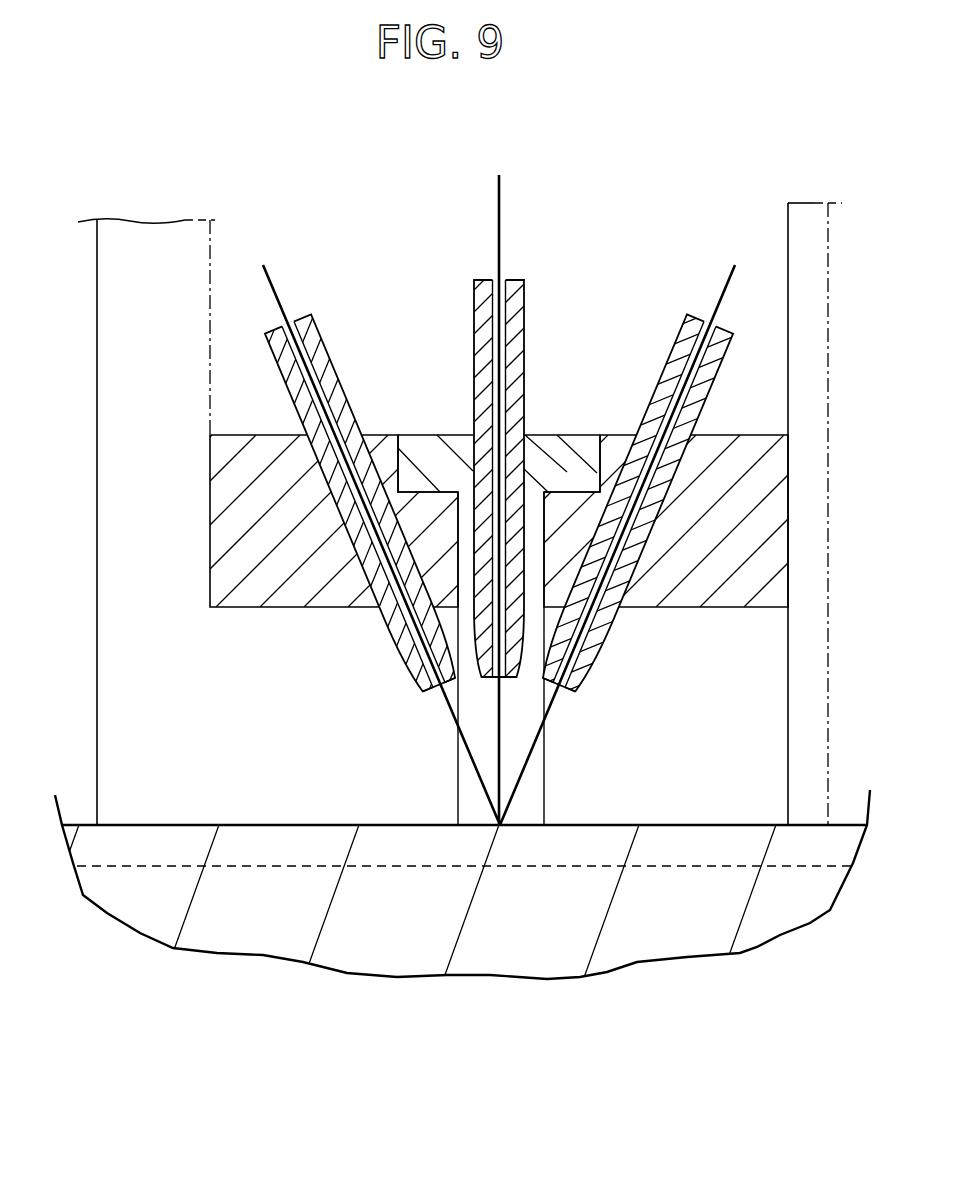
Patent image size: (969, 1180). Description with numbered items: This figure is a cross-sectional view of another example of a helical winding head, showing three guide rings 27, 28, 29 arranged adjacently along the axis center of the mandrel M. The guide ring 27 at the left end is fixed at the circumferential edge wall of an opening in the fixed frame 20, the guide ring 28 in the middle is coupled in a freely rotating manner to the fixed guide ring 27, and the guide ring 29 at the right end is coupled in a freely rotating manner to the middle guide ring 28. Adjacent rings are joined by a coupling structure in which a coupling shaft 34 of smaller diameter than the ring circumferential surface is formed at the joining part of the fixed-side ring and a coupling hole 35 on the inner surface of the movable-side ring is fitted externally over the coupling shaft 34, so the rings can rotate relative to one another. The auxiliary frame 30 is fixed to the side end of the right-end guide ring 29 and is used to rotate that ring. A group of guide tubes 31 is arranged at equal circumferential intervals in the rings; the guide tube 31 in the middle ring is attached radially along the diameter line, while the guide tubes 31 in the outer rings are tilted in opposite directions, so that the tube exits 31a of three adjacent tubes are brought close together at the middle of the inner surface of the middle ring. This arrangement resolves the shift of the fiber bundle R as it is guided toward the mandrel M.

The fixed frame 20 is at (212, 258).
The auxiliary frame 30 is at (787, 250).
The guide ring 27 is at (258, 434).
The guide ring 28 is at (552, 434).
The guide ring 29 is at (741, 434).
The guide tube 31 is at (347, 397).
The tube exit 31a is at (438, 695).
The coupling shaft 34 is at (420, 488).
The coupling hole 35 is at (573, 490).
The fiber bundle R is at (272, 283).
The mandrel M is at (696, 838).